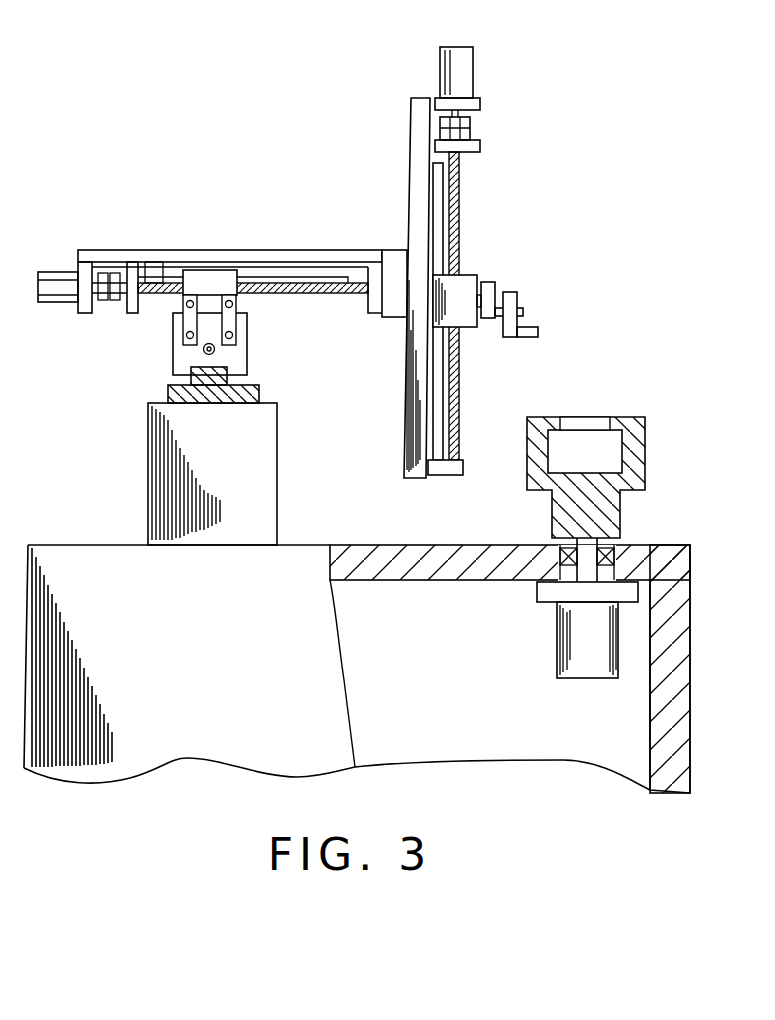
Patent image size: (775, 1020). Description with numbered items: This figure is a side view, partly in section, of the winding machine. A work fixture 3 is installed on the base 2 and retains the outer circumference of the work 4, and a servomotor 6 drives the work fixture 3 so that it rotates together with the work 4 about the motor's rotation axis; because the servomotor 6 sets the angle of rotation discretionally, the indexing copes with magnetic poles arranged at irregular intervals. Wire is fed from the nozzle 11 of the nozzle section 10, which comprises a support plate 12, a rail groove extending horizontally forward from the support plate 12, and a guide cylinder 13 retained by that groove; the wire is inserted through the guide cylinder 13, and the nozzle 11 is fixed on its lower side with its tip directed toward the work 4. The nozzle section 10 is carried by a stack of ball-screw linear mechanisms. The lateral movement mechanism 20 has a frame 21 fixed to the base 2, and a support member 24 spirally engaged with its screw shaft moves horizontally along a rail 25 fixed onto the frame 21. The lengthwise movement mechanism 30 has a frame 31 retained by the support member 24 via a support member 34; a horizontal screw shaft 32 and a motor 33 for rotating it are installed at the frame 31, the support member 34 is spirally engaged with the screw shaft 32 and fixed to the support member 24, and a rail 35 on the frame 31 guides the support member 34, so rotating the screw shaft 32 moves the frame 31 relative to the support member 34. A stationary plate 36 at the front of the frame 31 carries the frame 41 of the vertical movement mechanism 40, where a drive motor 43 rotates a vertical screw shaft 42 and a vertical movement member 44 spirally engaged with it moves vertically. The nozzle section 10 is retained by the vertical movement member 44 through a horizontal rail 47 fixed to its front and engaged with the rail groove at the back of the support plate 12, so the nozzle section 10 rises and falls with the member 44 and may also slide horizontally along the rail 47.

The base 2 is at (692, 570).
The work fixture 3 is at (612, 447).
The work 4 is at (618, 428).
The servomotor 6 is at (618, 636).
The nozzle section 10 is at (544, 266).
The nozzle 11 is at (537, 326).
The support plate 12 is at (489, 280).
The guide cylinder 13 is at (520, 294).
The lateral movement mechanism 20 is at (196, 429).
The frame 21 is at (262, 393).
The support member 24 is at (173, 338).
The rail 25 is at (225, 367).
The lengthwise movement mechanism 30 is at (216, 260).
The frame 31 is at (255, 250).
The horizontal screw shaft 32 is at (163, 281).
The motor 33 is at (56, 271).
The support member 34 is at (212, 270).
The rail 35 is at (327, 270).
The stationary plate 36 is at (393, 318).
The vertical movement mechanism 40 is at (466, 261).
The frame 41 is at (409, 180).
The vertical screw shaft 42 is at (462, 190).
The drive motor 43 is at (440, 73).
The vertical movement member 44 is at (468, 328).
The rail 47 is at (480, 310).